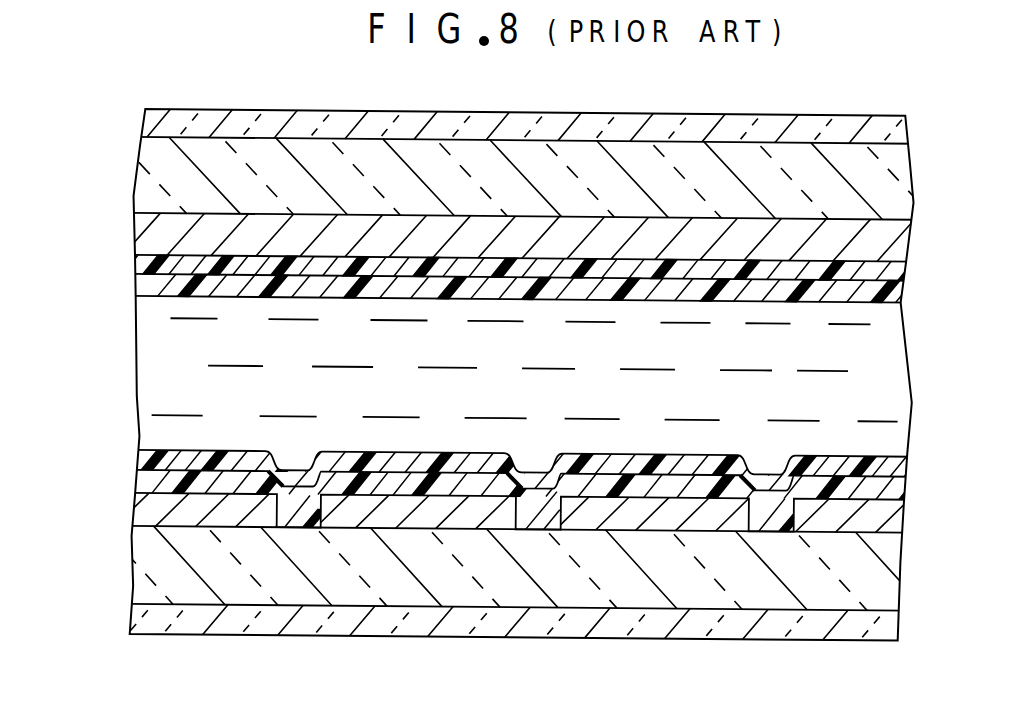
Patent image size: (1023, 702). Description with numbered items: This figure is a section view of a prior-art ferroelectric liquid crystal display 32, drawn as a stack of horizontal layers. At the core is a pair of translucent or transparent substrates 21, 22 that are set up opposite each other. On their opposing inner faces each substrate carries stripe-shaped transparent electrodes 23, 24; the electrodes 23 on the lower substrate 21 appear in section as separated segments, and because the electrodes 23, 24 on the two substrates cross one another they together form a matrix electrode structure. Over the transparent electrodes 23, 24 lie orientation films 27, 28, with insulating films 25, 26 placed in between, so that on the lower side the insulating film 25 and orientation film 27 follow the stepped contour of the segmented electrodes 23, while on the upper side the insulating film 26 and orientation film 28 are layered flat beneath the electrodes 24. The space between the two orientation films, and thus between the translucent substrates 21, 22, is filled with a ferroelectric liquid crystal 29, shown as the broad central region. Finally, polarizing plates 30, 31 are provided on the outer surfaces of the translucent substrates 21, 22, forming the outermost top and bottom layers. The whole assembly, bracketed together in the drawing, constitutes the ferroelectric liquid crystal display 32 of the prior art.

The translucent substrate 21 is at (882, 582).
The translucent substrate 22 is at (892, 177).
The transparent electrodes 23 is at (885, 524).
The transparent electrodes 24 is at (895, 241).
The insulating film 25 is at (890, 492).
The insulating film 26 is at (900, 271).
The orientation film 27 is at (897, 470).
The orientation film 28 is at (893, 300).
The ferroelectric liquid crystal 29 is at (890, 366).
The polarizing plate 30 is at (890, 627).
The polarizing plate 31 is at (890, 133).
The ferroelectric liquid crystal display 32 is at (103, 115).